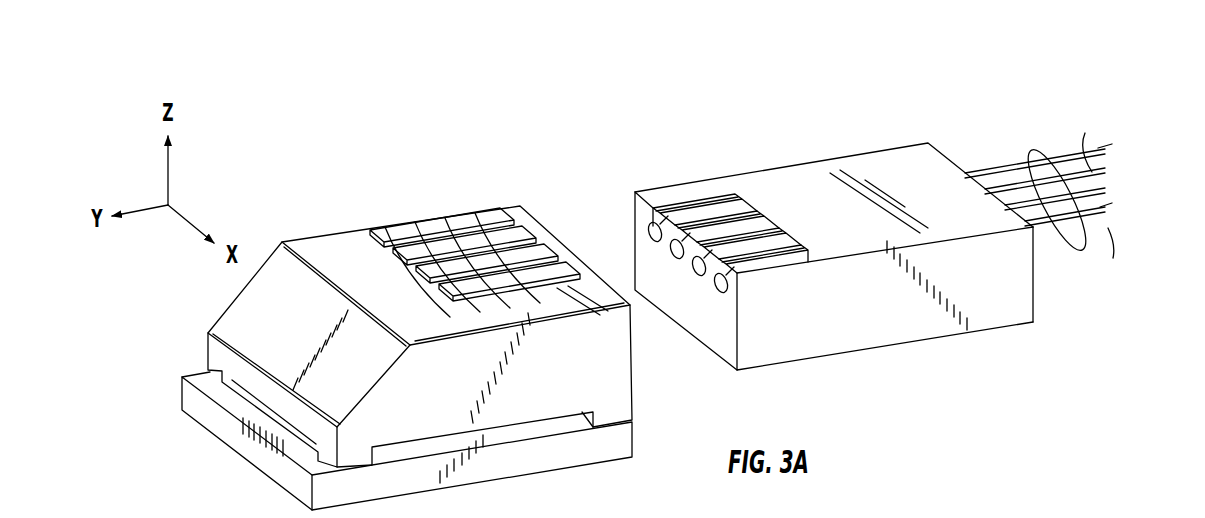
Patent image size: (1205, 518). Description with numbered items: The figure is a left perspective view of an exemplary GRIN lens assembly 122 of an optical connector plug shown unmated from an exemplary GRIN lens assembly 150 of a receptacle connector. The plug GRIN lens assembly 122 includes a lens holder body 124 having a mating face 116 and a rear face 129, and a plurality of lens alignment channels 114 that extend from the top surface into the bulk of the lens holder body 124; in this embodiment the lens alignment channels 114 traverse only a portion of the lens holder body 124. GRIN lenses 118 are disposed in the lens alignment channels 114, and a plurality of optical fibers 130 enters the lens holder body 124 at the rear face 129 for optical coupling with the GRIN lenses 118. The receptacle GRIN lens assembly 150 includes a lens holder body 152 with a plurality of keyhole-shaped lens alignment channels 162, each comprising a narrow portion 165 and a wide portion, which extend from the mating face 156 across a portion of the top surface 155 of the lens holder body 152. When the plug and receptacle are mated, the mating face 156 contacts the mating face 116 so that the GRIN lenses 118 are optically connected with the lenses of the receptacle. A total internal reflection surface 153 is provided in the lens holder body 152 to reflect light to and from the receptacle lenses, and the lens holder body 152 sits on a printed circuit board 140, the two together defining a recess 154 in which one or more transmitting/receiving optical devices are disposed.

The lens alignment channels 114 is at (791, 237).
The mating face 116 is at (640, 260).
The GRIN lenses 118 is at (657, 242).
The GRIN lens assembly 122 is at (812, 128).
The lens holder body 124 is at (970, 328).
The rear face 129 is at (1038, 310).
The optical fibers 130 is at (1090, 253).
The printed circuit board 140 is at (337, 498).
The GRIN lens assembly 150 is at (369, 146).
The lens holder body 152 is at (311, 235).
The total internal reflection surface 153 is at (248, 310).
The recess 154 is at (293, 430).
The top surface 155 is at (352, 238).
The mating face 156 is at (632, 403).
The lens alignment channels 162 is at (546, 274).
The narrow portion 165 is at (446, 266).